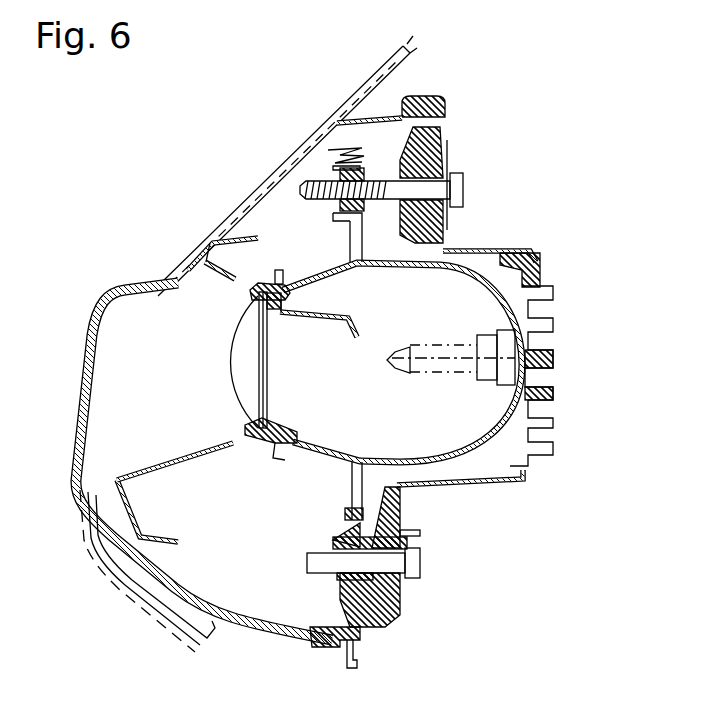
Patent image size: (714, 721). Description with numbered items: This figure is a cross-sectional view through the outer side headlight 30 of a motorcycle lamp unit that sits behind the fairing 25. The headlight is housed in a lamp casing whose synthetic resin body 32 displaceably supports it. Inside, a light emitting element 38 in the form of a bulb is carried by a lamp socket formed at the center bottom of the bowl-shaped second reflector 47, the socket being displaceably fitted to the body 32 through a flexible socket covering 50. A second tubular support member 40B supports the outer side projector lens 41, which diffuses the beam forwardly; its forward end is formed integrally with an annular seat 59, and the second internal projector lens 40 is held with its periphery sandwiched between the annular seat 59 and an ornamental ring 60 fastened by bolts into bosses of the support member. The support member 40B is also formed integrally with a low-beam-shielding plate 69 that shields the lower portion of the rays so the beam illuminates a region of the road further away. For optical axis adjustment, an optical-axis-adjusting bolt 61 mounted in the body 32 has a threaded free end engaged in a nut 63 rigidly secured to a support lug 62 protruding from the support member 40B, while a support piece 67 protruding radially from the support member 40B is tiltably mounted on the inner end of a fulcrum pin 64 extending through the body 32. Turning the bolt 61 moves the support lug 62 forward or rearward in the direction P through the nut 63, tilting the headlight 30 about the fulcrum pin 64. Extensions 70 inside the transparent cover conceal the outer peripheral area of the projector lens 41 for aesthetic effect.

The fairing 25 is at (253, 183).
The outer side headlight 30 is at (232, 362).
The body 32 is at (390, 630).
The light emitting element 38 is at (440, 342).
The second internal projector lens 40 is at (335, 450).
The second tubular support member 40B is at (402, 362).
The outer side projector lens 41 is at (250, 388).
The second reflector 47 is at (470, 256).
The flexible socket covering 50 is at (553, 292).
The annular seat 59 is at (277, 312).
The ornamental ring 60 is at (250, 292).
The optical-axis-adjusting bolt 61 is at (463, 185).
The support lug 62 is at (348, 250).
The nut 63 is at (372, 203).
The fulcrum pin 64 is at (422, 562).
The support piece 67 is at (347, 487).
The low-beam-shielding plate 69 is at (342, 322).
The extensions 70 is at (218, 243).
The direction of movement of support lug P is at (350, 150).